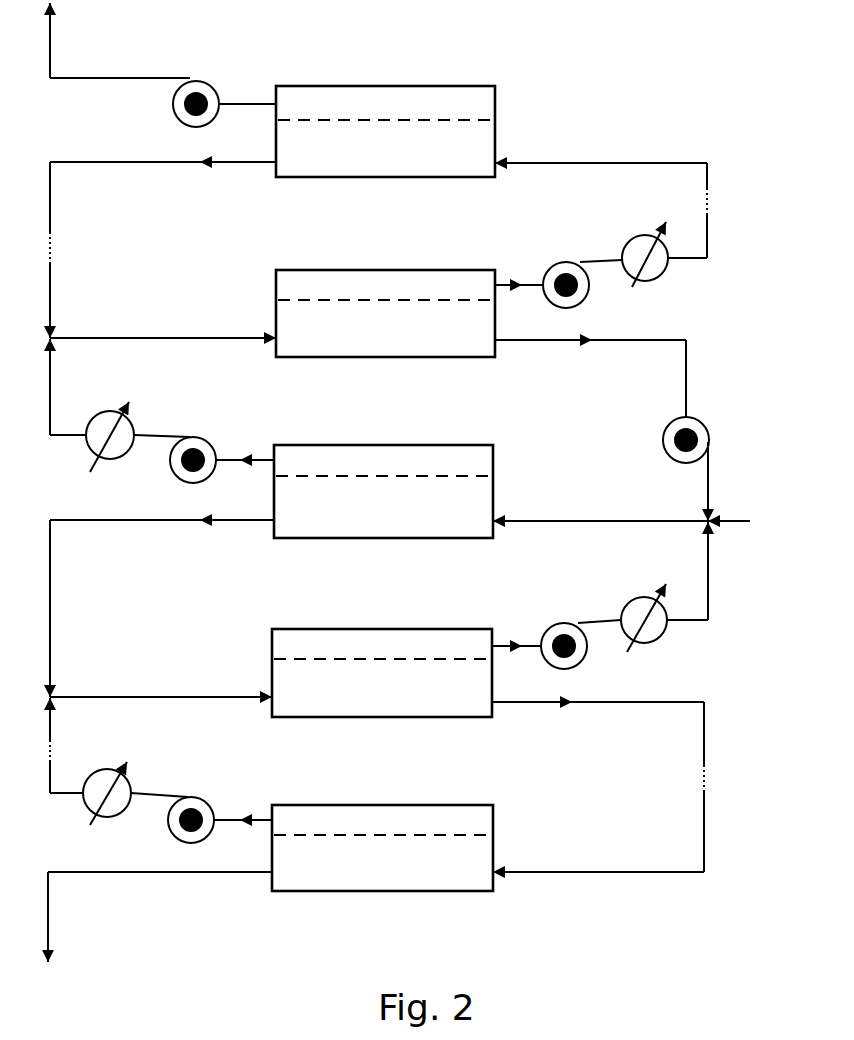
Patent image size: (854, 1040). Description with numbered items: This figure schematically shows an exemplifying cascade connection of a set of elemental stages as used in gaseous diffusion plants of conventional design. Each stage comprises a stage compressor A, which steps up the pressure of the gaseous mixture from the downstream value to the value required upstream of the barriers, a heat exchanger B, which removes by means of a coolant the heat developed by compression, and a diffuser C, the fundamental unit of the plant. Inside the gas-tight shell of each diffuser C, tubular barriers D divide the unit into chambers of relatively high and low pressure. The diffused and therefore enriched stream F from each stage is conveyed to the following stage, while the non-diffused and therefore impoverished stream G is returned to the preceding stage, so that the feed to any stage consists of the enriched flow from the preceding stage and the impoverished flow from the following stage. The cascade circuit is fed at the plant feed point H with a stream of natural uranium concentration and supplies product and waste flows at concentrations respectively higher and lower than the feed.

The stage compressor A is at (209, 97).
The heat exchanger B is at (657, 274).
The diffuser C is at (497, 102).
The tubular barriers D is at (442, 118).
The diffused stream F is at (50, 43).
The non-diffused stream G is at (138, 161).
The plant feed point H is at (738, 525).